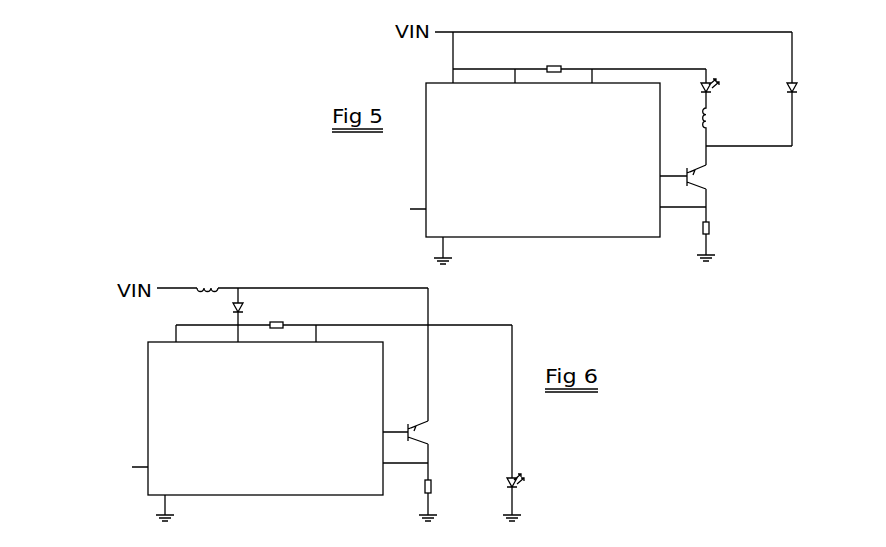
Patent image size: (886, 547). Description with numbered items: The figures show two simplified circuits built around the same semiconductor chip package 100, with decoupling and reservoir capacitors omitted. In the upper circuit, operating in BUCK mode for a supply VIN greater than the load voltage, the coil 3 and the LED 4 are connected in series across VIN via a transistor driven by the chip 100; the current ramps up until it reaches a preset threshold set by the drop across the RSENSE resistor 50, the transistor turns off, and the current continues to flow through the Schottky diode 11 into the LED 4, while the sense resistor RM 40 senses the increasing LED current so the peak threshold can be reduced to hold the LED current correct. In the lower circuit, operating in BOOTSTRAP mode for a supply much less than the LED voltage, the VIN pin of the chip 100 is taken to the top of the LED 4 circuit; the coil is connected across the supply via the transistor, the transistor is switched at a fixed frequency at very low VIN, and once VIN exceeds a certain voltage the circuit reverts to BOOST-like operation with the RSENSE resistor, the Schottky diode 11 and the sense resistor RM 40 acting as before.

In FIG. 5, the chip package 100 is at (426, 163).
In FIG. 6, the chip package 100 is at (148, 422).
In FIG. 5, the sense resistor RM 40 is at (566, 68).
In FIG. 6, the sense resistor RM 40 is at (285, 324).
In FIG. 5, the coil 3 is at (710, 115).
In FIG. 6, the coil 3 is at (205, 286).
In FIG. 5, the LED 4 is at (705, 90).
In FIG. 6, the LED 4 is at (516, 479).
In FIG. 5, the Schottky diode 11 is at (796, 95).
In FIG. 6, the Schottky diode 11 is at (235, 306).
In FIG. 5, the RSENSE resistor 50 is at (709, 222).
In FIG. 6, the RSENSE resistor 50 is at (431, 481).